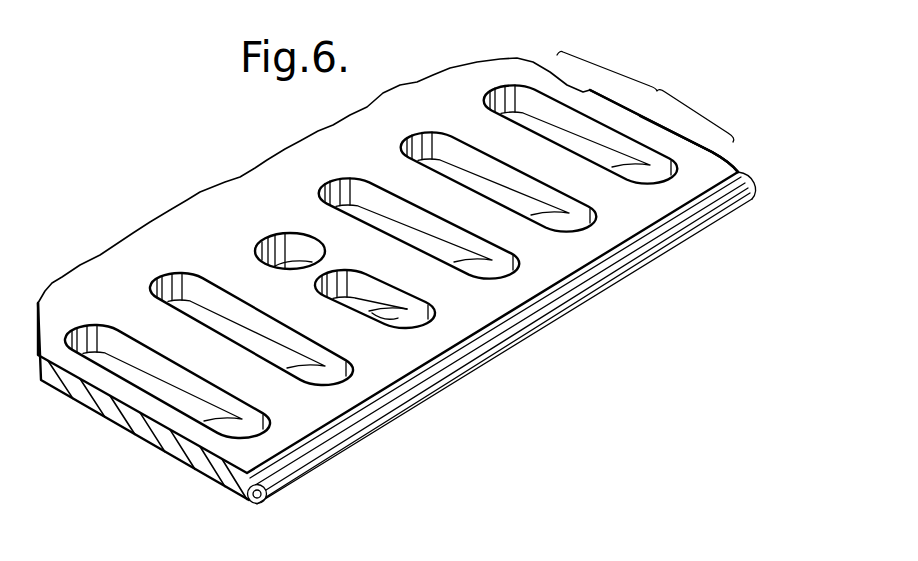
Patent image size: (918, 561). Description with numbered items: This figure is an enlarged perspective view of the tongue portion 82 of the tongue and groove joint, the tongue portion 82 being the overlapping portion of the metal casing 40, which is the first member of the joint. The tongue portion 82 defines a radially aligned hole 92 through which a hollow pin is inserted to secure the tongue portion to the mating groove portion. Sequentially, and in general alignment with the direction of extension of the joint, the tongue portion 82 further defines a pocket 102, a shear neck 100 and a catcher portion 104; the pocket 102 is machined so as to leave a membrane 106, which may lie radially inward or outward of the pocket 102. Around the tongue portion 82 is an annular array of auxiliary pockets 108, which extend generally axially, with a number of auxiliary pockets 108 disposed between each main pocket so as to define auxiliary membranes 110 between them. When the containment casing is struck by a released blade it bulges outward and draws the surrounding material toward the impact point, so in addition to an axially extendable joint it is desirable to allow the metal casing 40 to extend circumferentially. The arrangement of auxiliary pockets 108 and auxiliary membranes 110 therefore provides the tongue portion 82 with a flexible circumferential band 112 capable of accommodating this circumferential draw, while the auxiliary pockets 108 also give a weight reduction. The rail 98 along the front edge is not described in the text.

The metal casing 40 is at (252, 164).
The tongue portion 82 is at (192, 190).
The hole 92 is at (258, 246).
The rail 98 is at (636, 259).
The shear neck 100 is at (326, 265).
The pocket 102 is at (406, 307).
The catcher portion 104 is at (458, 341).
The membrane 106 is at (385, 323).
The auxiliary pocket 108 is at (552, 80).
The auxiliary membrane 110 is at (697, 147).
The flexible circumferential band 112 is at (647, 111).